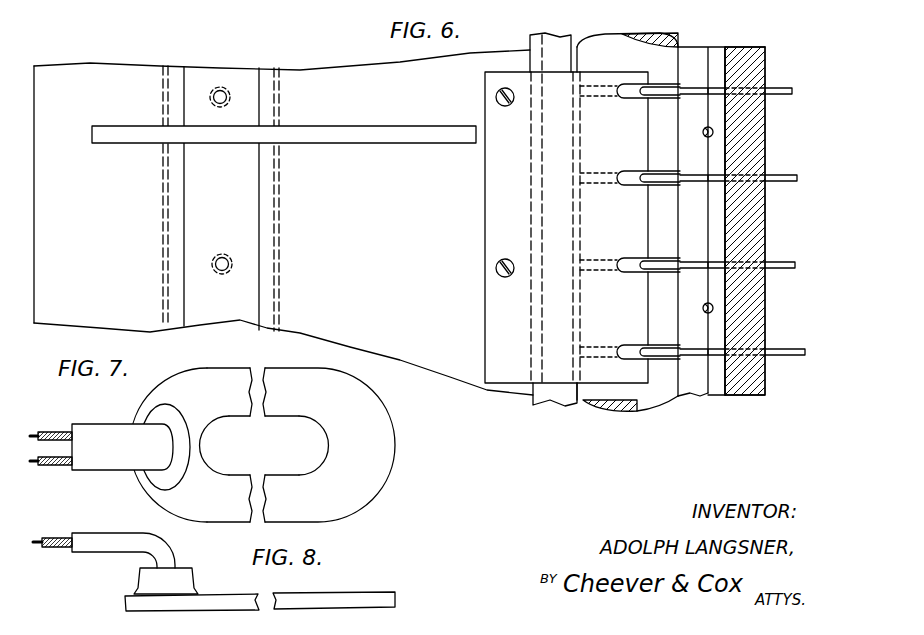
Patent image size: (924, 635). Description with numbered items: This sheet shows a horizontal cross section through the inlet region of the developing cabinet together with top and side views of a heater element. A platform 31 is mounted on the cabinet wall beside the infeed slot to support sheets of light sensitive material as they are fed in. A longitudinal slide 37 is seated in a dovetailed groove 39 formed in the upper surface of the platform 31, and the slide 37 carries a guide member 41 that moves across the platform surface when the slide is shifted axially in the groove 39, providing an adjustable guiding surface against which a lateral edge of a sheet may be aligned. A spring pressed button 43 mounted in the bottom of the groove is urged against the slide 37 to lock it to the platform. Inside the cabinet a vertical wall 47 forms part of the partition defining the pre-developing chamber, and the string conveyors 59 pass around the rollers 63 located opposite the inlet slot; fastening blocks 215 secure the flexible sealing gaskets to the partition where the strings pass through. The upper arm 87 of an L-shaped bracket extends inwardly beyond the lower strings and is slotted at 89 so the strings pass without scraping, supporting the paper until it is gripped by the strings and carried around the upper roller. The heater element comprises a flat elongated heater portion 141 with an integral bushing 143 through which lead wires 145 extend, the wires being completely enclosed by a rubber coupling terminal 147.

In FIG. 6, the platform 31 is at (283, 222).
In FIG. 6, the longitudinal slide 37 is at (248, 200).
In FIG. 6, the dovetailed groove 39 is at (280, 246).
In FIG. 6, the guide member 41 is at (112, 133).
In FIG. 6, the spring pressed button 43 is at (232, 97).
In FIG. 6, the vertical wall 47 is at (757, 328).
In FIG. 6, the conveyors 59 is at (782, 262).
In FIG. 6, the rollers 63 is at (668, 128).
In FIG. 6, the upper arm 87 is at (590, 75).
In FIG. 6, the slots 89 is at (627, 259).
In FIG. 6, the fastening blocks 215 is at (718, 297).
In FIG. 7, the heater portion 141 is at (329, 505).
In FIG. 8, the heater portion 141 is at (325, 598).
In FIG. 7, the bushing 143 is at (180, 418).
In FIG. 8, the bushing 143 is at (180, 578).
In FIG. 7, the lead wires 145 is at (55, 466).
In FIG. 8, the lead wires 145 is at (58, 538).
In FIG. 7, the coupling terminal 147 is at (102, 424).
In FIG. 8, the coupling terminal 147 is at (105, 533).